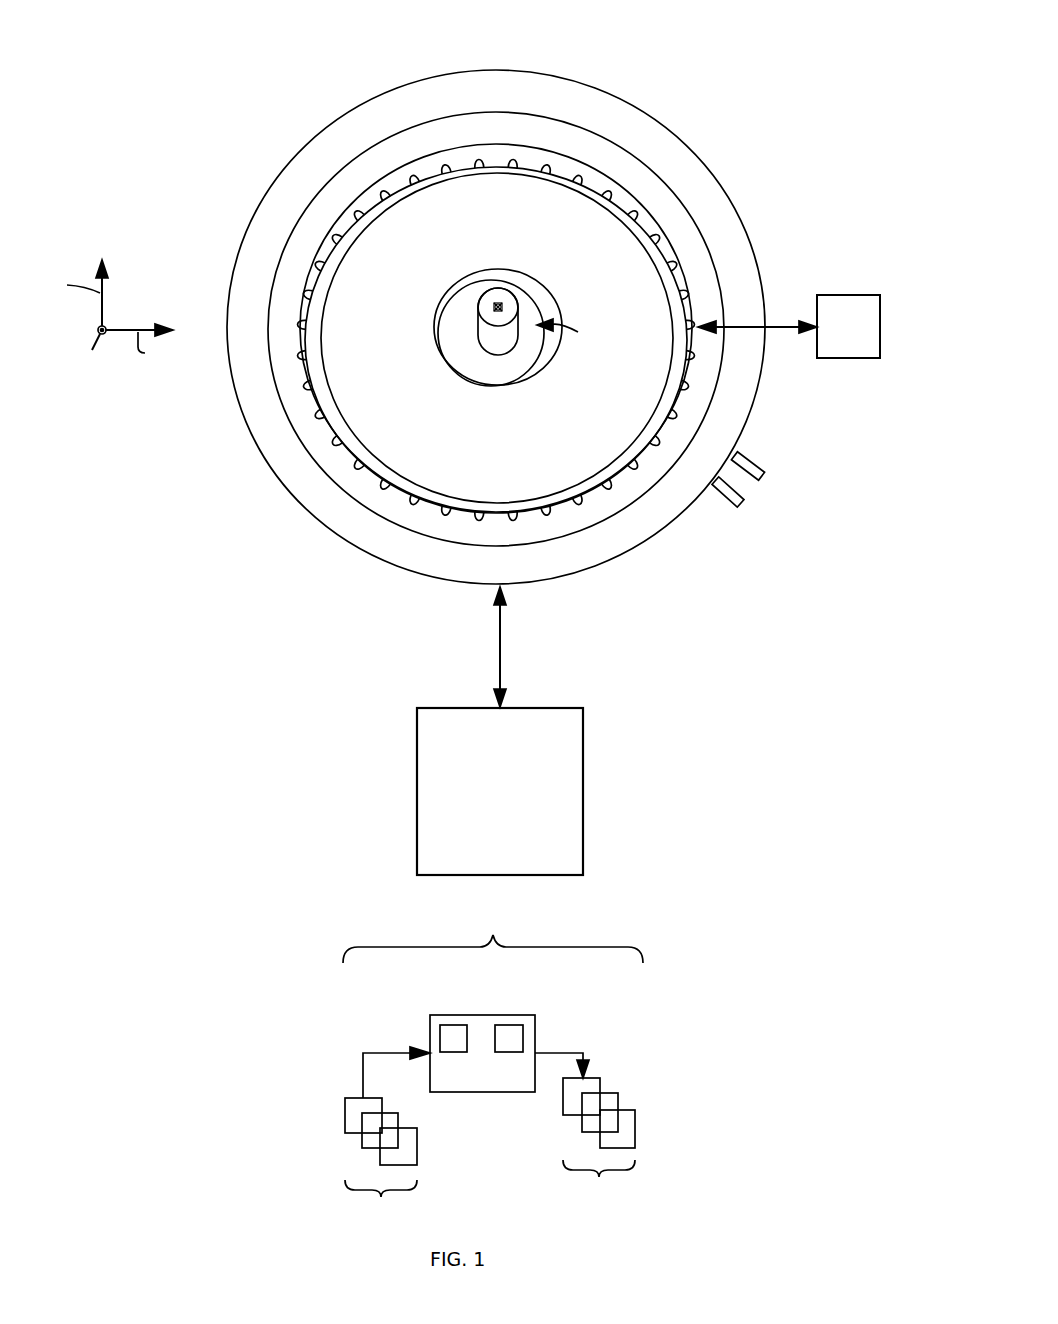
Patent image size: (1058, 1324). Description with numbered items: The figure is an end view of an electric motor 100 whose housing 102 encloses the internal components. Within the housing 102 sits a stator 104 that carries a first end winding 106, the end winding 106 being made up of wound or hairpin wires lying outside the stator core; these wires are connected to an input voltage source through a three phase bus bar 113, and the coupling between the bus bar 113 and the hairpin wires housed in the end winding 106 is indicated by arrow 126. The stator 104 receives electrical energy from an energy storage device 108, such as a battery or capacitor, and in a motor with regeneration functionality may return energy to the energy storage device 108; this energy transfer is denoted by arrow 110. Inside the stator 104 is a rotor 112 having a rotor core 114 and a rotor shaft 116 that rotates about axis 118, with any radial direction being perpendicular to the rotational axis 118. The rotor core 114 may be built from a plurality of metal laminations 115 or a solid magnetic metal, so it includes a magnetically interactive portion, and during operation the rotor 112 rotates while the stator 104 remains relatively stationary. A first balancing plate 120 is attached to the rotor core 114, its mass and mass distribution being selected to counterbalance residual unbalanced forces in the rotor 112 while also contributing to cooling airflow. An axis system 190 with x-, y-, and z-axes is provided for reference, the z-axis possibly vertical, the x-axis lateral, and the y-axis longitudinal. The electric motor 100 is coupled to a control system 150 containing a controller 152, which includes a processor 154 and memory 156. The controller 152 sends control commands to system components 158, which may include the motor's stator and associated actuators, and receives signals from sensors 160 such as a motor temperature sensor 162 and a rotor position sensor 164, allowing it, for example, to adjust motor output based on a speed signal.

The electric motor 100 is at (224, 32).
The housing 102 is at (722, 206).
The stator 104 is at (735, 258).
The first end winding 106 is at (695, 242).
The energy storage device 108 is at (435, 693).
The arrow 110 is at (523, 652).
The rotor 112 is at (567, 339).
The three phase bus bar 113 is at (827, 295).
The rotor core 114 is at (515, 372).
The metal laminations 115 is at (548, 358).
The rotor shaft 116 is at (493, 342).
The axis 118 is at (493, 307).
The first balancing plate 120 is at (628, 403).
The arrow 126 is at (760, 327).
The control system 150 is at (493, 938).
The controller 152 is at (482, 1033).
The processor 154 is at (438, 1037).
The memory 156 is at (525, 1037).
The system components 158 is at (599, 1139).
The sensors 160 is at (381, 1157).
The motor temperature sensor 162 is at (765, 473).
The rotor position sensor 164 is at (743, 505).
The axis system 190 is at (143, 286).